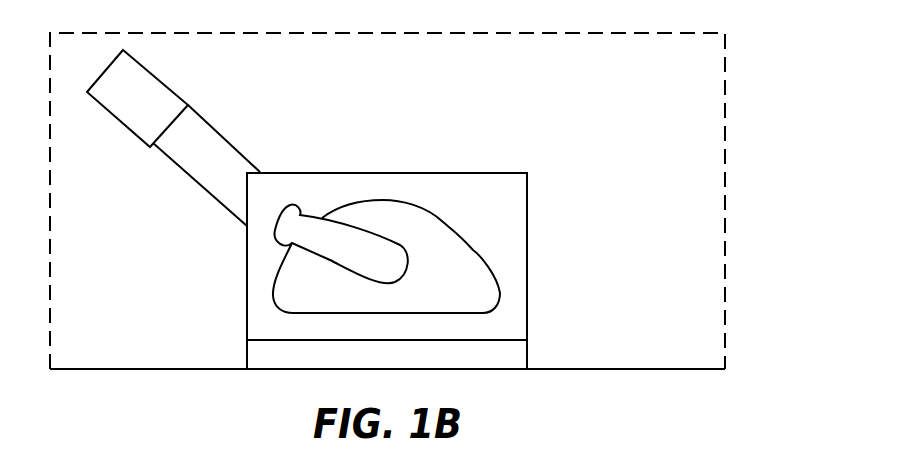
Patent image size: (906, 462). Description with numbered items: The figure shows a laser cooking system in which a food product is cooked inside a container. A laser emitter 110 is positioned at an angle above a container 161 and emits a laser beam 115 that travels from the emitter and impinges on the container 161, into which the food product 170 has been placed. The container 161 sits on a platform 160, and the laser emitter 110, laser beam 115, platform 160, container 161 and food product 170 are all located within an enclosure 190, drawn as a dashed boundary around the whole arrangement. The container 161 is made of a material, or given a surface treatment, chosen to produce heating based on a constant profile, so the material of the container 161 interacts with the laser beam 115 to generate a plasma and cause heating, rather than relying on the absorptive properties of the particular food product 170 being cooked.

The laser emitter 110 is at (167, 85).
The laser beam 115 is at (229, 145).
The platform 160 is at (528, 353).
The container 161 is at (385, 172).
The food product 170 is at (443, 222).
The enclosure 190 is at (725, 202).